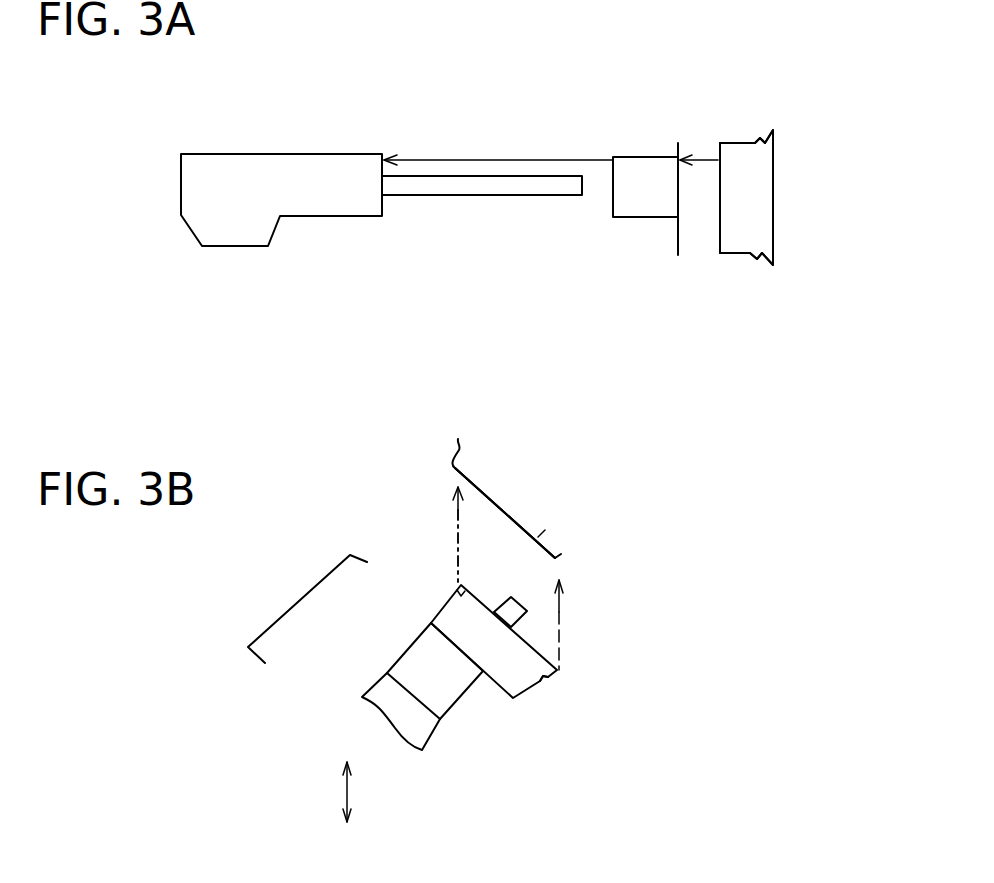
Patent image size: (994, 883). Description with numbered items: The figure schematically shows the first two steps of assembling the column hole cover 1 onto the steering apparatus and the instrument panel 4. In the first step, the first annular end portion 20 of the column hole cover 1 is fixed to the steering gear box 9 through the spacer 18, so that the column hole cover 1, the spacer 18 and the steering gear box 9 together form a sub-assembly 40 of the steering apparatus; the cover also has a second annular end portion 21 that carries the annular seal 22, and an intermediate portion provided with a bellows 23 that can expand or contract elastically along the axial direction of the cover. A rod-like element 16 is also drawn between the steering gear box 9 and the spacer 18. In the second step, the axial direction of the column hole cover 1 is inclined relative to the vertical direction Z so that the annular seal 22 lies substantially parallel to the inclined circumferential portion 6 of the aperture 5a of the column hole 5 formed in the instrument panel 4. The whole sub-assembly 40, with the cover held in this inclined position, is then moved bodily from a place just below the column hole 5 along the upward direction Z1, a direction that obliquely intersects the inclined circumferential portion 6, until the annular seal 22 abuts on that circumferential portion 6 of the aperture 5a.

In FIG. 3A, the column hole cover 1 is at (750, 141).
In FIG. 3B, the column hole cover 1 is at (440, 612).
In FIG. 3B, the instrument panel 4 is at (563, 556).
In FIG. 3B, the column hole 5 is at (469, 474).
In FIG. 3B, the aperture 5a is at (508, 517).
In FIG. 3B, the circumferential portion 6 is at (452, 477).
In FIG. 3A, the steering gear box 9 is at (296, 152).
In FIG. 3B, the steering gear box 9 is at (377, 687).
In FIG. 3A, the rod 16 is at (493, 186).
In FIG. 3B, the rod 16 is at (527, 612).
In FIG. 3A, the spacer 18 is at (639, 157).
In FIG. 3B, the spacer 18 is at (415, 656).
In FIG. 3A, the first annular end portion 20 is at (742, 143).
In FIG. 3A, the second annular end portion 21 is at (765, 178).
In FIG. 3B, the annular seal 22 is at (560, 668).
In FIG. 3B, the bellows 23 is at (543, 683).
In FIG. 3B, the sub-assembly 40 is at (292, 604).
In FIG. 3B, the vertical direction Z is at (347, 793).
In FIG. 3B, the upward direction Z1 is at (457, 555).